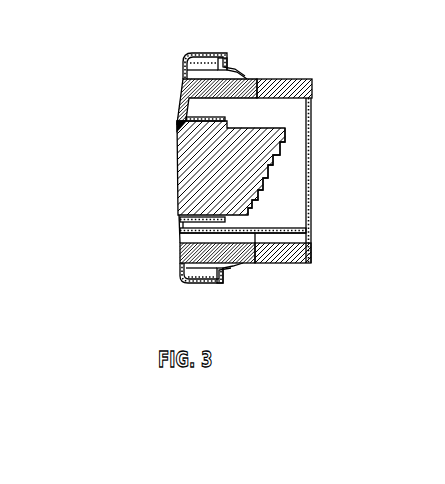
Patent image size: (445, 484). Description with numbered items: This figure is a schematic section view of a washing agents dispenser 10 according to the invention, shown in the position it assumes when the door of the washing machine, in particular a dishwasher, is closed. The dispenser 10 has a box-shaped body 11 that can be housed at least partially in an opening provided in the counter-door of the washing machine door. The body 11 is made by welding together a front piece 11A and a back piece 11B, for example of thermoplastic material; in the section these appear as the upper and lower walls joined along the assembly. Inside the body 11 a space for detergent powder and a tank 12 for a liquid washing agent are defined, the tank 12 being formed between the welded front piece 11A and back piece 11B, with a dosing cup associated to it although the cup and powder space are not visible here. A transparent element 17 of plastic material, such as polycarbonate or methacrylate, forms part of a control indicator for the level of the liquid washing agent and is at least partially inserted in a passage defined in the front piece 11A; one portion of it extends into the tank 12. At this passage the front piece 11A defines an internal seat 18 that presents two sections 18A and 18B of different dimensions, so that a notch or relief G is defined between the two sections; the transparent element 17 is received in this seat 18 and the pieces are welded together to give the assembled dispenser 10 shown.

The washing agents dispenser 10 is at (343, 63).
The box-shaped body 11 is at (294, 270).
The front piece 11A is at (252, 84).
The back piece 11B is at (311, 256).
The tank 12 is at (294, 119).
The transparent element 17 is at (270, 174).
The internal seat 18 is at (202, 117).
The first section of the internal seat 18A is at (179, 216).
The second section of the internal seat 18B is at (207, 222).
The notch or relief G is at (177, 137).